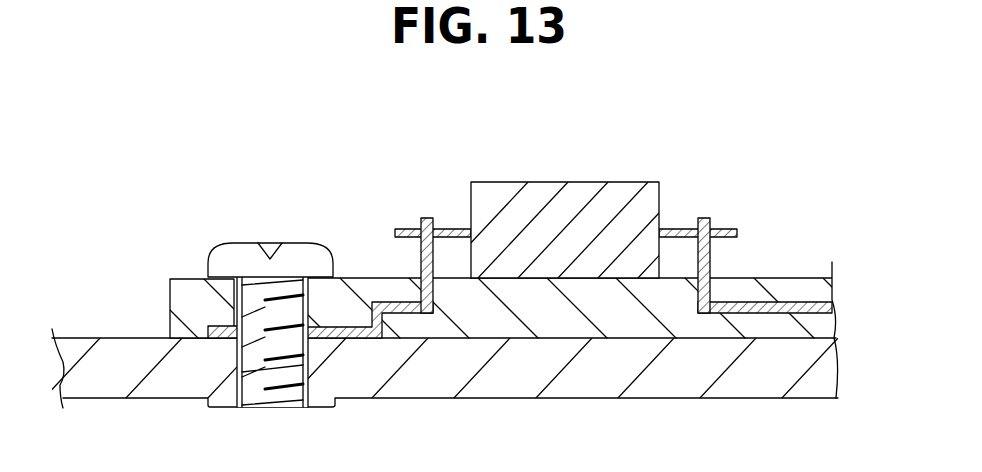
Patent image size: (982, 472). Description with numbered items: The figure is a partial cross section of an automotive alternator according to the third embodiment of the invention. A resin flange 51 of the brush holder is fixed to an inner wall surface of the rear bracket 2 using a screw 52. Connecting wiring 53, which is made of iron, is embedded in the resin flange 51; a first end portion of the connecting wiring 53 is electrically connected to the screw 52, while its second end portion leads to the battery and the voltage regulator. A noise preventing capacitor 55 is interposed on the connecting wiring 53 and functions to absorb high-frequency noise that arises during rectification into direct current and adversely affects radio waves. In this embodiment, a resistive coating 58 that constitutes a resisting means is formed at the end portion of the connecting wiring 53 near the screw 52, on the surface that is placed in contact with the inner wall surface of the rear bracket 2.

The rear bracket 2 is at (123, 378).
The flange 51 is at (186, 304).
The screw 52 is at (270, 240).
The connecting wiring 53 is at (780, 305).
The noise preventing capacitor 55 is at (576, 212).
The resistive coating 58 is at (211, 338).